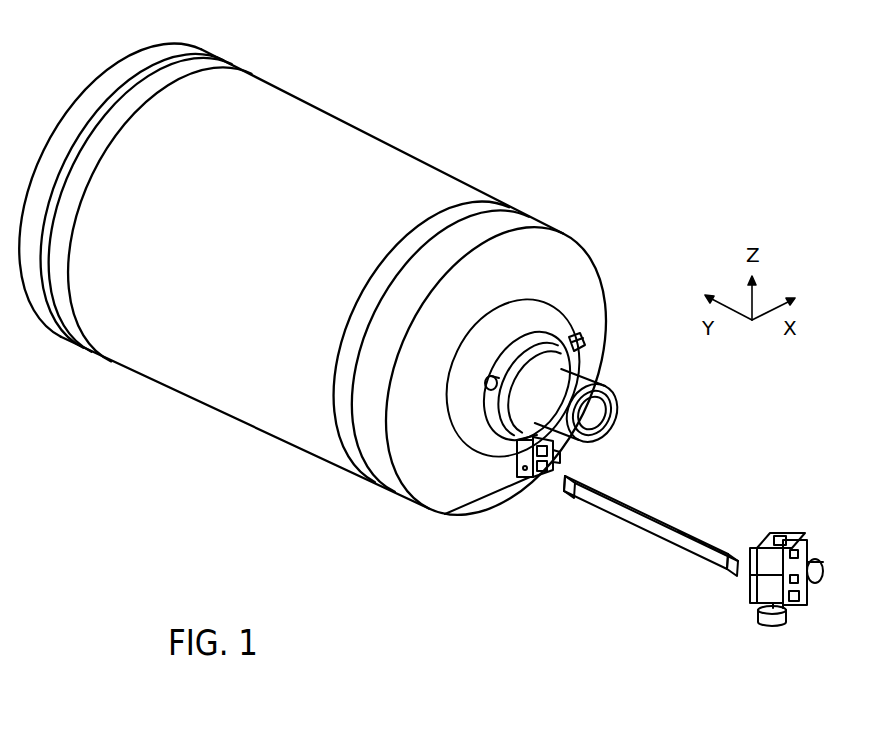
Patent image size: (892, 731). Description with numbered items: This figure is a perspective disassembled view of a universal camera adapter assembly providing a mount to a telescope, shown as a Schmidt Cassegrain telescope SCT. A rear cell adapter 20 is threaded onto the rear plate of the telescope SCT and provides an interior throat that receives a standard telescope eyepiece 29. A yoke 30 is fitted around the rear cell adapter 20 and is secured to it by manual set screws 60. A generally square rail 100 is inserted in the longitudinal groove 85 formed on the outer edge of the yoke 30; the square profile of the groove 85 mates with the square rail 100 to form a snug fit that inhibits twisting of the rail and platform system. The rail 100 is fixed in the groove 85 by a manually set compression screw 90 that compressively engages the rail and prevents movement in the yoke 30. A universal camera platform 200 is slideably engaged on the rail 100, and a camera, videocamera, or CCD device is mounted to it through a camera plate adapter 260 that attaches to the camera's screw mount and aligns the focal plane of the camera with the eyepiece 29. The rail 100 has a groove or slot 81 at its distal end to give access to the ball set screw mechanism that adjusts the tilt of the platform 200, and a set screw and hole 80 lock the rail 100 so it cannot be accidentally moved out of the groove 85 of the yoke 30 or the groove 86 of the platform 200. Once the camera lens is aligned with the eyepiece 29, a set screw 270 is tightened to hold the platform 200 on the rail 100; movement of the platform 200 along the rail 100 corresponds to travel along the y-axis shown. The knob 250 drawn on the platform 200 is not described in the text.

The Schmidt Cassegrain telescope SCT is at (334, 298).
The rear cell adapter 20 is at (575, 360).
The telescope eyepiece 29 is at (598, 378).
The manual set screws 60 is at (583, 337).
The yoke 30 is at (520, 470).
The longitudinal groove 85 is at (542, 480).
The compression screw 90 is at (558, 457).
The rail 100 is at (647, 513).
The set screw and hole 80 is at (567, 487).
The groove or slot 81 is at (693, 537).
The universal camera platform 200 is at (738, 588).
The camera plate adapter 260 is at (773, 537).
The groove 86 is at (822, 598).
The set screw 270 is at (822, 575).
The knob 250 is at (773, 622).